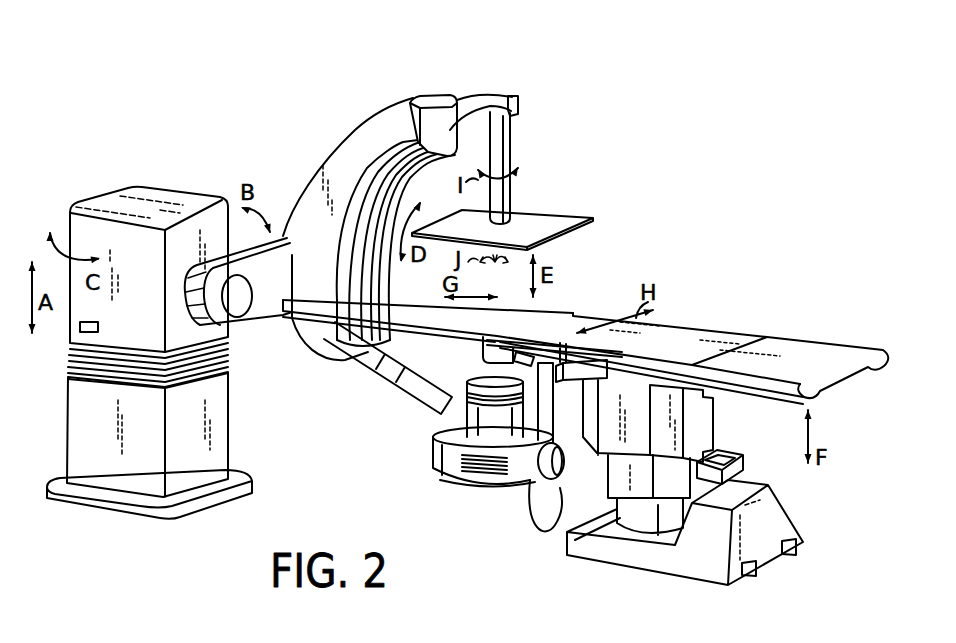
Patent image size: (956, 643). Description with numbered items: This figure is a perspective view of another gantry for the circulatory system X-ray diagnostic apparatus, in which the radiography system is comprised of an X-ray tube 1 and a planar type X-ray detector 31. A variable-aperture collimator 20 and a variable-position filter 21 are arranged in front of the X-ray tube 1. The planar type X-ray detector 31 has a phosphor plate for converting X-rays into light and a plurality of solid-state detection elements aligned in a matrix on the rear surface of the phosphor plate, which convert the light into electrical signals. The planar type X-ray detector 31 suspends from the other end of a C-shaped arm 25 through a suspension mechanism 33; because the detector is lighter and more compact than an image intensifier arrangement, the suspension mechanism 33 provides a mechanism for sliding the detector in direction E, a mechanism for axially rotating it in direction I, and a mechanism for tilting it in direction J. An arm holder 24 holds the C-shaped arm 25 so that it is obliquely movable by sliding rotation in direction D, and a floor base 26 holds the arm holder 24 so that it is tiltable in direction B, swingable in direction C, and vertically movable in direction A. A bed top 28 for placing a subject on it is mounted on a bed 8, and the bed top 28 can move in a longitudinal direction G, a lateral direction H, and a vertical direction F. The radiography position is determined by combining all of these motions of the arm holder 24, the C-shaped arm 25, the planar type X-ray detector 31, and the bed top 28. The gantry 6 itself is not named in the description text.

The X-ray tube 1 is at (462, 478).
The C-arm 6 is at (327, 134).
The bed 8 is at (781, 321).
The variable-aperture collimator 20 is at (465, 418).
The variable-position filter 21 is at (481, 379).
The arm holder 24 is at (381, 114).
The C-shaped arm 25 is at (517, 95).
The floor base 26 is at (234, 442).
The bed top 28 is at (683, 333).
The planar type X-ray detector 31 is at (597, 223).
The suspension mechanism 33 is at (511, 140).